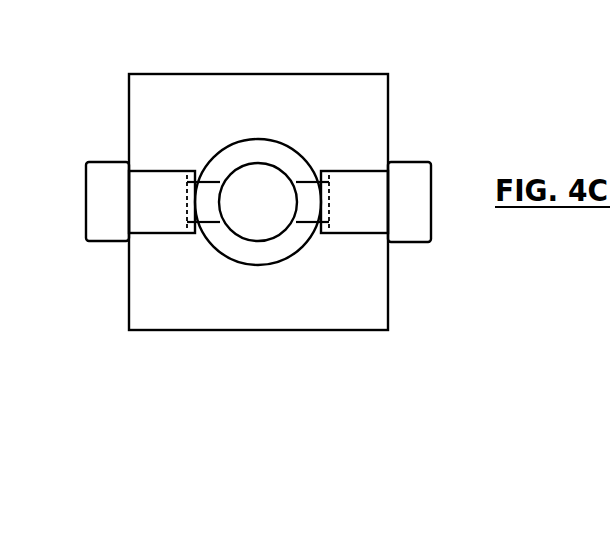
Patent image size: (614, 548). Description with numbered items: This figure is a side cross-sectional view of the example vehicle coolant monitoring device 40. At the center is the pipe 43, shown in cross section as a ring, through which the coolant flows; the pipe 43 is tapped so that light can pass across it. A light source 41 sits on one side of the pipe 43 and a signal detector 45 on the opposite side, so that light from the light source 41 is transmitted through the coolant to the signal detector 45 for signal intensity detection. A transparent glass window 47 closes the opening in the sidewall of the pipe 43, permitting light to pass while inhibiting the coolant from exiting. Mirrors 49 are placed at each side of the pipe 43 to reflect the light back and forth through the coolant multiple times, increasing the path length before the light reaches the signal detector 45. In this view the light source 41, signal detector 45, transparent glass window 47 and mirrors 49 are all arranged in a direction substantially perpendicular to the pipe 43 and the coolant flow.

The vehicle coolant monitoring device 40 is at (424, 51).
The light source 41 is at (85, 163).
The pipe 43 is at (285, 142).
The signal detector 45 is at (422, 243).
The transparent glass window 47 is at (187, 195).
The mirrors 49 is at (332, 192).